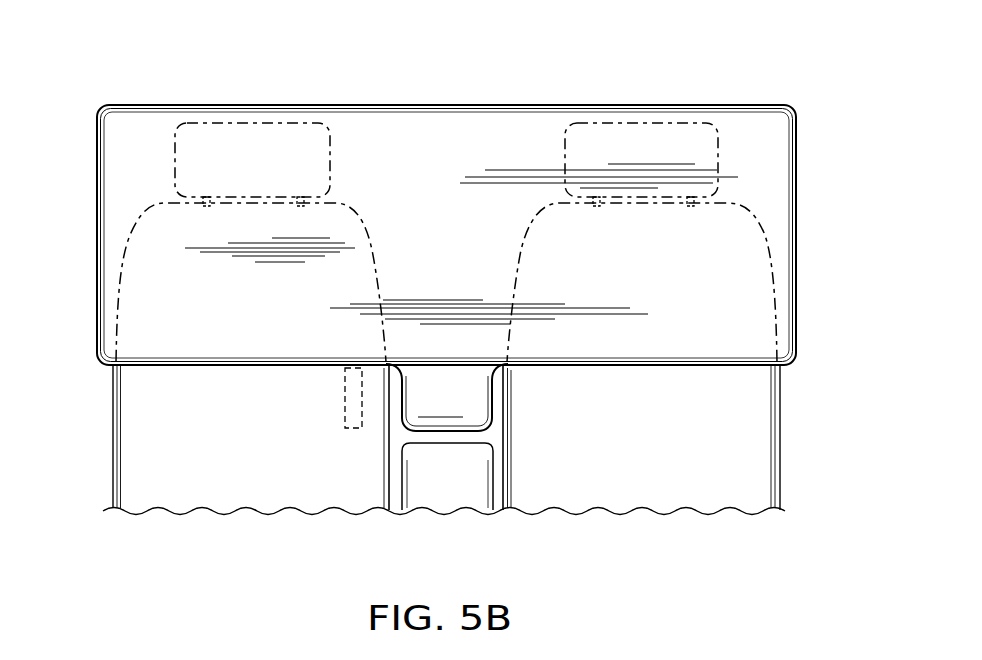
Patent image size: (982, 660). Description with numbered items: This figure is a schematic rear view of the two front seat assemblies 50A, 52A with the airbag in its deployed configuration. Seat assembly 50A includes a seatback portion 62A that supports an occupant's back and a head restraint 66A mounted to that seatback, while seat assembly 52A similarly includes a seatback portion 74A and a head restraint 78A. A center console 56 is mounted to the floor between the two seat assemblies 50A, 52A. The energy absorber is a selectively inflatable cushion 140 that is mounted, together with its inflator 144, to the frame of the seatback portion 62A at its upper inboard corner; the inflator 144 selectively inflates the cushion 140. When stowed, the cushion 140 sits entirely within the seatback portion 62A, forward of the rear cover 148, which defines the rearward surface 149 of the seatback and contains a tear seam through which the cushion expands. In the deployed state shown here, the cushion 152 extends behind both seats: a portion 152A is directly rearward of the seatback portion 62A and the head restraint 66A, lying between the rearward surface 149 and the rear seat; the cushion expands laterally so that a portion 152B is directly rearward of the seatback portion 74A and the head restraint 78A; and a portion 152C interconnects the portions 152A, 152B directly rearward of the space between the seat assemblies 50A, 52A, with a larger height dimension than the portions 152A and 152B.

The seat assembly 50A is at (211, 192).
The seat assembly 52A is at (660, 192).
The seatback portion 62A is at (122, 285).
The seatback portion 74A is at (772, 287).
The head restraint 66A is at (273, 135).
The head restraint 78A is at (610, 135).
The selectively inflatable cushion 140 is at (765, 105).
The inflator 144 is at (347, 430).
The rear cover 148 is at (137, 473).
The rearward surface 149 is at (137, 384).
The cushion portions 152 is at (450, 460).
The portion of the cushion 152A is at (214, 462).
The portion of the cushion 152B is at (662, 348).
The portion of the cushion 152C is at (447, 402).
The center console 56 is at (450, 497).